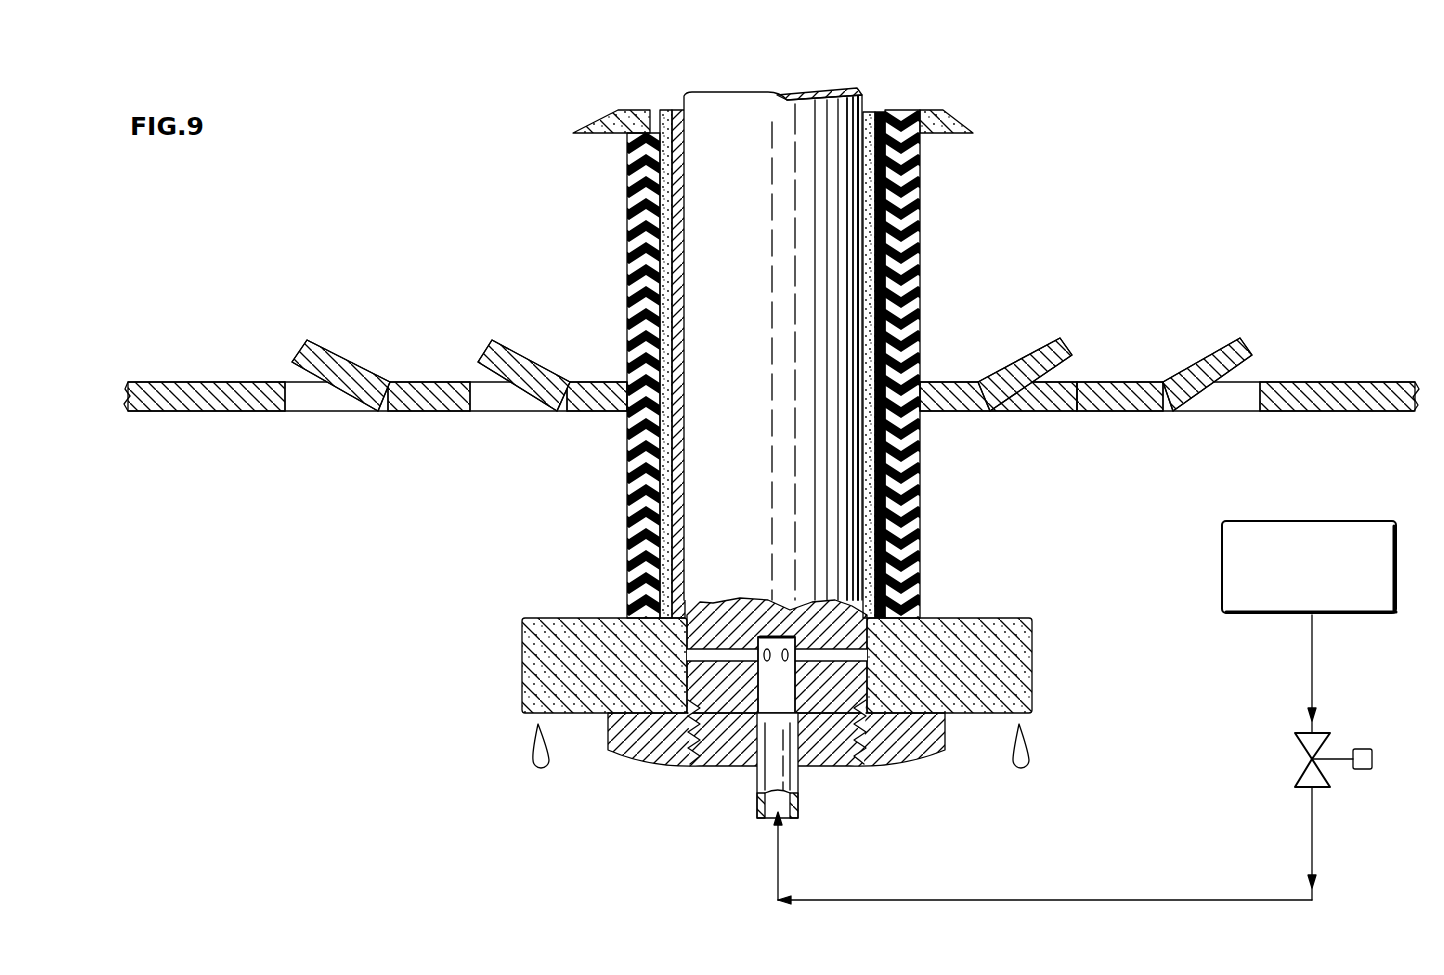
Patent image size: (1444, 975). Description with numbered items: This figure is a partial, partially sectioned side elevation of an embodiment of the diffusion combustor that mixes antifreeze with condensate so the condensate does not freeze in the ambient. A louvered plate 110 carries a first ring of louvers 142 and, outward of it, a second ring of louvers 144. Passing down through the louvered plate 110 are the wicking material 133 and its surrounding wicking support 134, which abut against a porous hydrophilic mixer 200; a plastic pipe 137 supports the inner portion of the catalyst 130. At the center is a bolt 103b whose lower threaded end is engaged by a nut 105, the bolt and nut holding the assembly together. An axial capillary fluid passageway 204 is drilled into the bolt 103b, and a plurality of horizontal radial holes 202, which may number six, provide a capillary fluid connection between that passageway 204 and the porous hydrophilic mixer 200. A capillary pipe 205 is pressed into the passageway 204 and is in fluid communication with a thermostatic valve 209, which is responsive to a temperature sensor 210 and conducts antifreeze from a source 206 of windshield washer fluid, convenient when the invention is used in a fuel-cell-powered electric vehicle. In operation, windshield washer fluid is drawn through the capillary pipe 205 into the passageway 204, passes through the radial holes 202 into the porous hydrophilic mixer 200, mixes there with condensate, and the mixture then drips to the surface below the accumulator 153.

The bolt 103b is at (745, 102).
The wicking material 133 is at (875, 112).
The wicking support 134 is at (883, 112).
The catalyst 130 is at (945, 128).
The plastic pipe 137 is at (923, 232).
The first ring of louvers 142 is at (1056, 340).
The second ring of louvers 144 is at (1232, 340).
The louvered plate 110 is at (1360, 376).
The radial holes 202 is at (783, 637).
The porous hydrophilic mixer 200 is at (968, 618).
The accumulator 153 is at (530, 750).
The axial capillary fluid passageway 204 is at (780, 695).
The nut 105 is at (902, 760).
The capillary pipe 205 is at (753, 800).
The source of windshield washer fluid 206 is at (1340, 521).
The thermostatic valve 209 is at (1309, 756).
The temperature sensor 210 is at (1363, 747).